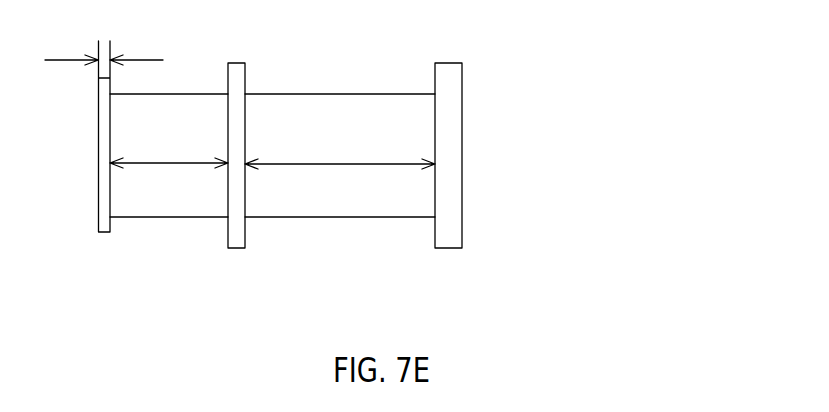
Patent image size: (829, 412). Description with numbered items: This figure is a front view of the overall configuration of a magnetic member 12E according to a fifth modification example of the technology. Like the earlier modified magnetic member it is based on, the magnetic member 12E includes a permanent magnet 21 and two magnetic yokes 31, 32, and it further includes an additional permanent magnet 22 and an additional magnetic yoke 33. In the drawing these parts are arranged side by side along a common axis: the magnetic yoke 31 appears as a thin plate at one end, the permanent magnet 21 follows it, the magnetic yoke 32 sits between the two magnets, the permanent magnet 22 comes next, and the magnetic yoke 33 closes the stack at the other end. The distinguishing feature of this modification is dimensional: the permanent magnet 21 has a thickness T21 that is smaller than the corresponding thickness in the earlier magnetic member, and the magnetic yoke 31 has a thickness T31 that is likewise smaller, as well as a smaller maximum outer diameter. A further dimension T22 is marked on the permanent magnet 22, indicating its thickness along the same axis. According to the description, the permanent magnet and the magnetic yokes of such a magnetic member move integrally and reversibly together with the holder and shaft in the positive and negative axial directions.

The magnetic member 12E is at (574, 105).
The permanent magnet 21 is at (183, 185).
The permanent magnet 22 is at (333, 198).
The magnetic yoke 31 is at (105, 222).
The magnetic yoke 32 is at (235, 242).
The magnetic yoke 33 is at (453, 235).
The thickness of magnetic yoke T31 is at (104, 37).
The thickness of permanent magnet T21 is at (169, 147).
The thickness of second body portion T22 is at (340, 149).